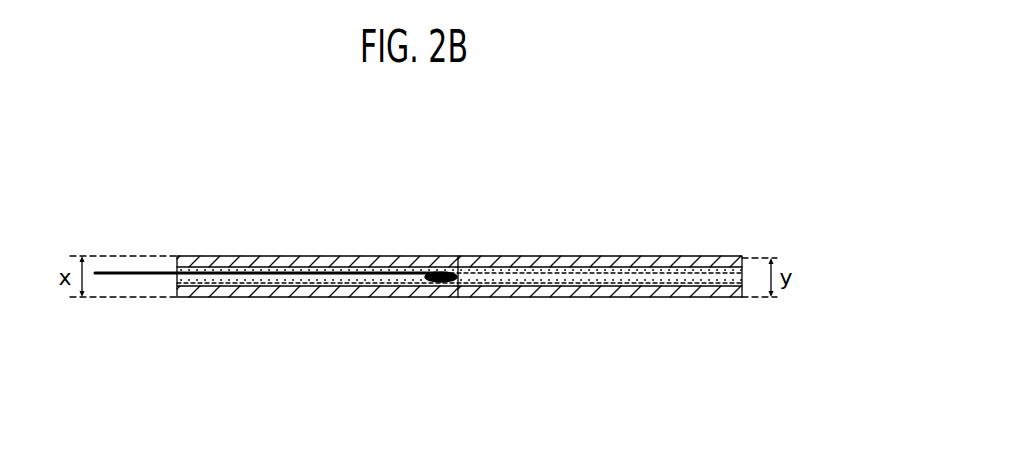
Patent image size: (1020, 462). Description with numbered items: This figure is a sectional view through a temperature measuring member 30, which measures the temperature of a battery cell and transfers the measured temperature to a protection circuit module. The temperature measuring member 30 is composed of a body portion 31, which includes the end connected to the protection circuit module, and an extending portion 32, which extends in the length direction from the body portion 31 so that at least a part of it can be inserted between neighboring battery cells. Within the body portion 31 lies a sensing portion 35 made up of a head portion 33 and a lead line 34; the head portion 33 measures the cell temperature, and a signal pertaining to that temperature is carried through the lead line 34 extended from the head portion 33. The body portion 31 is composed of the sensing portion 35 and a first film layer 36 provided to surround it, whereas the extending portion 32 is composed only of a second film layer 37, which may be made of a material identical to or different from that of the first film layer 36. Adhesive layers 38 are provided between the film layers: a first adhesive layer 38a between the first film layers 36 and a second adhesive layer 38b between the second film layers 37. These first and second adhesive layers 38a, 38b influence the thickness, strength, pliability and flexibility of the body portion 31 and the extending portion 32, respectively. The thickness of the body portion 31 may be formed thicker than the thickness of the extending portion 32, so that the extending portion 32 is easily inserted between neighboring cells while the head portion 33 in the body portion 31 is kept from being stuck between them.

The temperature measuring member 30 is at (689, 161).
The body portion 31 is at (458, 233).
The extending portion 32 is at (458, 233).
The head portion 33 is at (436, 288).
The lead line 34 is at (147, 276).
The sensing portion 35 is at (343, 380).
The first film layer 36 is at (372, 322).
The second film layer 37 is at (652, 342).
The adhesive layers 38 is at (540, 168).
The first adhesive layer 38a is at (403, 268).
The second adhesive layer 38b is at (540, 272).